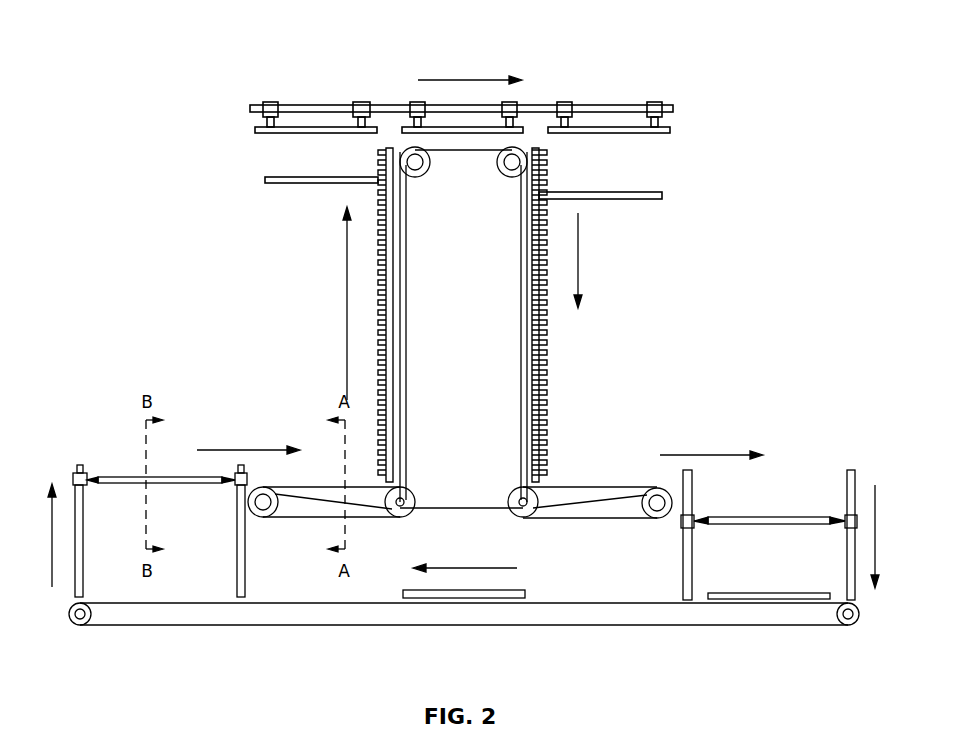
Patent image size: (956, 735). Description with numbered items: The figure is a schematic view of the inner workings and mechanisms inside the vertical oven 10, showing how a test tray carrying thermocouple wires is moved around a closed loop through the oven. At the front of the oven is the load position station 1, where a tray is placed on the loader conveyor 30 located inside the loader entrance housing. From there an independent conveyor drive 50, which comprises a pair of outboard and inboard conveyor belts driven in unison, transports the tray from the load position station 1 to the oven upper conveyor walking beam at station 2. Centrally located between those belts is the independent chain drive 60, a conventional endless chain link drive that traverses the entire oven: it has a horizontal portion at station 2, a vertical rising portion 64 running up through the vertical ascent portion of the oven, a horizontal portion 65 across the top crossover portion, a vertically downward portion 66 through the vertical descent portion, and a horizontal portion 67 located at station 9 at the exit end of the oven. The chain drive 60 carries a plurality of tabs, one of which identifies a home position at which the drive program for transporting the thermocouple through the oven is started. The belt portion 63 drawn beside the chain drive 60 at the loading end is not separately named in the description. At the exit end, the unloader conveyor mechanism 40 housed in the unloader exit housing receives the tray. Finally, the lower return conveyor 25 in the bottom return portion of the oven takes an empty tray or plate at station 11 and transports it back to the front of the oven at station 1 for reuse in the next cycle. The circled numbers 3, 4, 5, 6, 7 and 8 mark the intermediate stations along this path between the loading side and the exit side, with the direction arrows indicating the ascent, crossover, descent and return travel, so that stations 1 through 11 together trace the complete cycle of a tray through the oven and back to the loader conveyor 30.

The load position station 1 is at (116, 434).
The station 2 is at (295, 410).
The step 3 - transfer to left arm 3 is at (252, 183).
The step 4 - loading onto top conveyor 4 is at (260, 87).
The step 5 - top conveyor transport 5 is at (404, 87).
The step 6 - unloading from top conveyor 6 is at (594, 89).
The step 7 - transfer to right arm 7 is at (688, 193).
The step 8 - descent on vertical conveyor 8 is at (624, 273).
The station 9 is at (598, 444).
The vertical oven 10 is at (795, 458).
The station 11 is at (747, 610).
The lower return conveyor 25 is at (473, 624).
The loader conveyor 30 is at (120, 484).
The unloader conveyor mechanism 40 is at (785, 517).
The independent conveyor drive 50 is at (374, 518).
The independent chain drive 60 is at (276, 526).
The lower left belt 63 is at (308, 519).
The vertical rising portion 64 is at (405, 262).
The horizontal portion 65 is at (456, 153).
The vertically downward portion 66 is at (518, 413).
The horizontal portion 67 is at (620, 497).